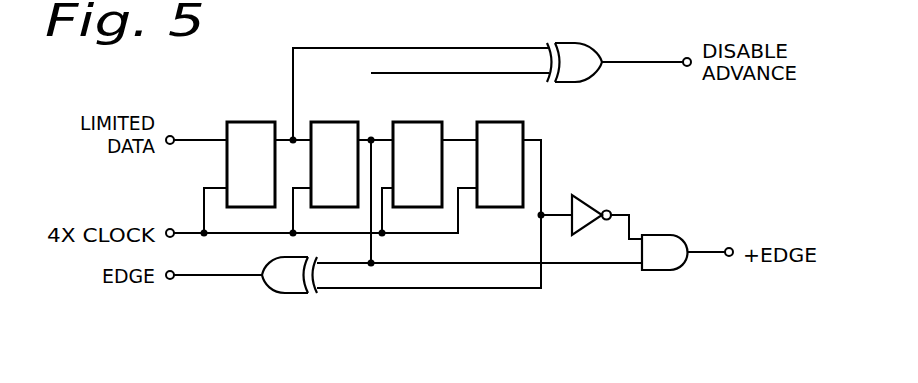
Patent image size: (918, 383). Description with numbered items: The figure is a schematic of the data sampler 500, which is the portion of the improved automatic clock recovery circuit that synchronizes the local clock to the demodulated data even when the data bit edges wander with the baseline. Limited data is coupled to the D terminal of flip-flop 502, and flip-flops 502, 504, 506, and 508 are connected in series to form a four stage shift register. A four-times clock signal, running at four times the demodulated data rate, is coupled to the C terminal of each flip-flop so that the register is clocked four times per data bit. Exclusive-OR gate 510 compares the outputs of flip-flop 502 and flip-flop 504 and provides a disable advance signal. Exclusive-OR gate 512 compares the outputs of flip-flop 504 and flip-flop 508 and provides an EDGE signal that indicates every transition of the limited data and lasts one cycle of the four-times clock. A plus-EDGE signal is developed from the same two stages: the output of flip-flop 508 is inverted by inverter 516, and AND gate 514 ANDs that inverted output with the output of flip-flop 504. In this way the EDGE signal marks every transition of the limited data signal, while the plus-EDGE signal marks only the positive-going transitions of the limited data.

The data sampler 500 is at (408, 144).
The flip-flop 502 is at (251, 122).
The flip-flop 504 is at (334, 122).
The flip-flop 506 is at (416, 122).
The flip-flop 508 is at (498, 122).
The exclusive-OR gate 510 is at (571, 43).
The exclusive-OR gate 512 is at (297, 294).
The AND gate 514 is at (664, 234).
The inverter 516 is at (578, 195).